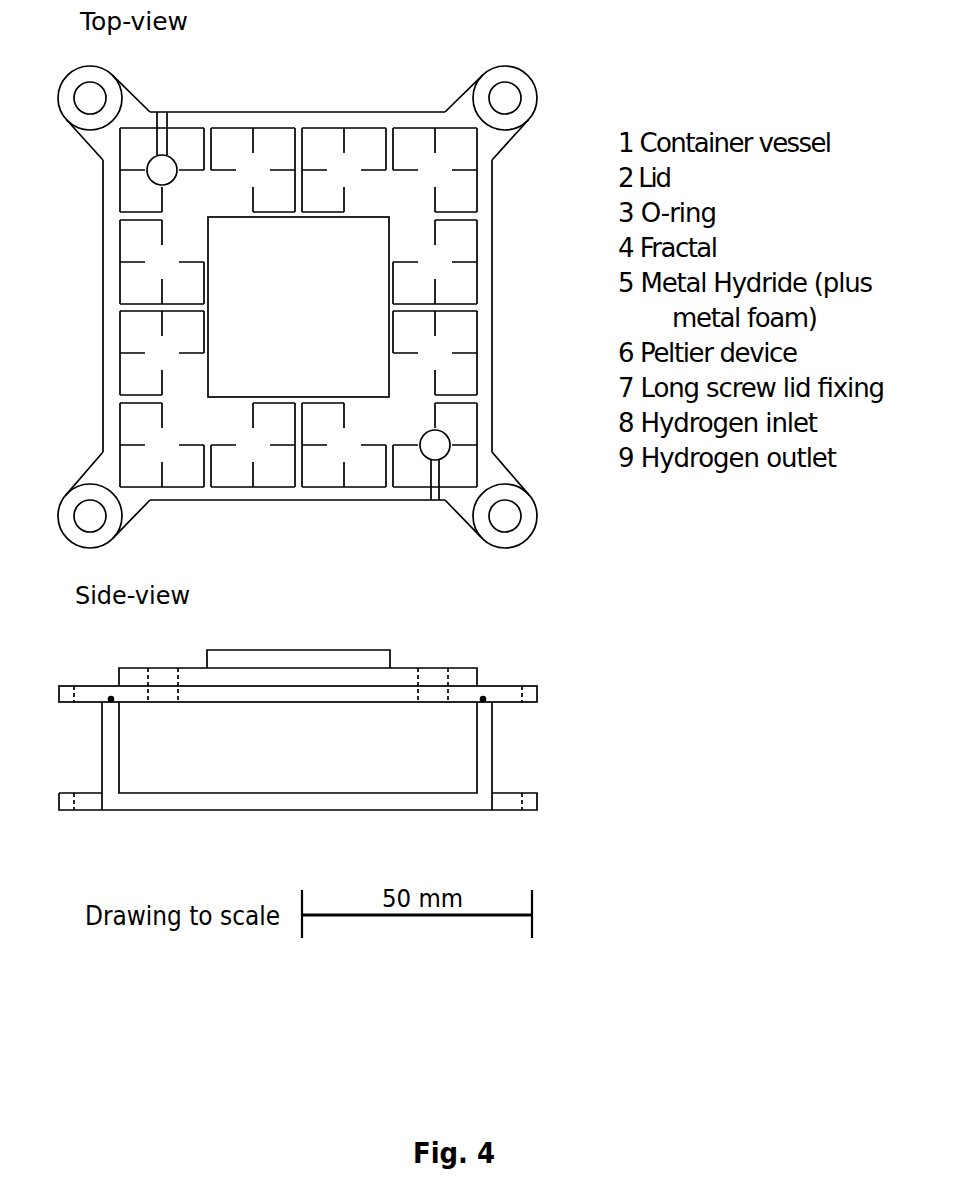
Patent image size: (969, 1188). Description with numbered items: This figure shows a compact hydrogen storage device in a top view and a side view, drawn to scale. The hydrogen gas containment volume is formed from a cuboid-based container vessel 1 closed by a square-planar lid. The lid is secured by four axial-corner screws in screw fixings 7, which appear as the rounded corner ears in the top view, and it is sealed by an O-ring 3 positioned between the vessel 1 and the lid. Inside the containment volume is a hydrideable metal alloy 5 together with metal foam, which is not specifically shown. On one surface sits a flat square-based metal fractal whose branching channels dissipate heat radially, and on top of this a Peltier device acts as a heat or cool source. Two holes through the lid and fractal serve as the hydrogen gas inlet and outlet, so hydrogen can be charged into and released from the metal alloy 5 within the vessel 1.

The container vessel 1 is at (107, 750).
The O-ring 3 is at (482, 697).
The hydrideable metal/metal alloy 5 is at (455, 753).
The screw fixings 7 is at (512, 92).